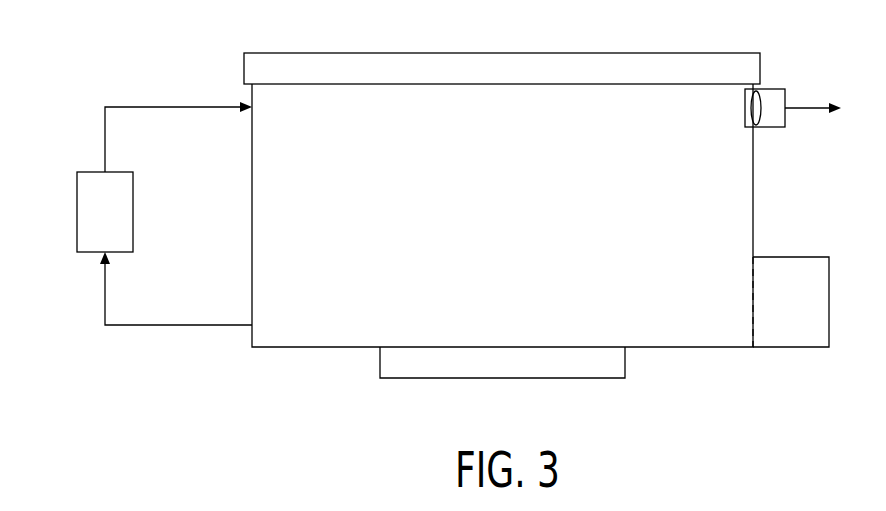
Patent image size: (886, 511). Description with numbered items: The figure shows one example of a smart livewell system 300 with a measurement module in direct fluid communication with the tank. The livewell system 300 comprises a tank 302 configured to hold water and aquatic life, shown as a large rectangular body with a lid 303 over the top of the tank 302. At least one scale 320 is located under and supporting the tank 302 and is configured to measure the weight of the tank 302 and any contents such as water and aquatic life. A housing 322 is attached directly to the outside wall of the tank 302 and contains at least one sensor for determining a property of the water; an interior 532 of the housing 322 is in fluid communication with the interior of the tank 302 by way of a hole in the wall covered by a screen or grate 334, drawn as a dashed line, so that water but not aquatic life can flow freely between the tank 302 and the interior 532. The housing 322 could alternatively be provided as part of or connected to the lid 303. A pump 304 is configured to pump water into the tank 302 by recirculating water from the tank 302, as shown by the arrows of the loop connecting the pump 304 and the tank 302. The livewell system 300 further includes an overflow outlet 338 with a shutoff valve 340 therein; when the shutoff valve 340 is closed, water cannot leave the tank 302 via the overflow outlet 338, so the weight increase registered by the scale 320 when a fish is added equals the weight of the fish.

The livewell system 300 is at (208, 392).
The tank 302 is at (251, 203).
The lid 303 is at (517, 53).
The pump 304 is at (77, 213).
The scale 320 is at (628, 362).
The housing 322 is at (767, 257).
The screen or grate 334 is at (750, 297).
The overflow outlet 338 is at (768, 127).
The shutoff valve 340 is at (750, 108).
The interior of the housing 532 is at (813, 312).